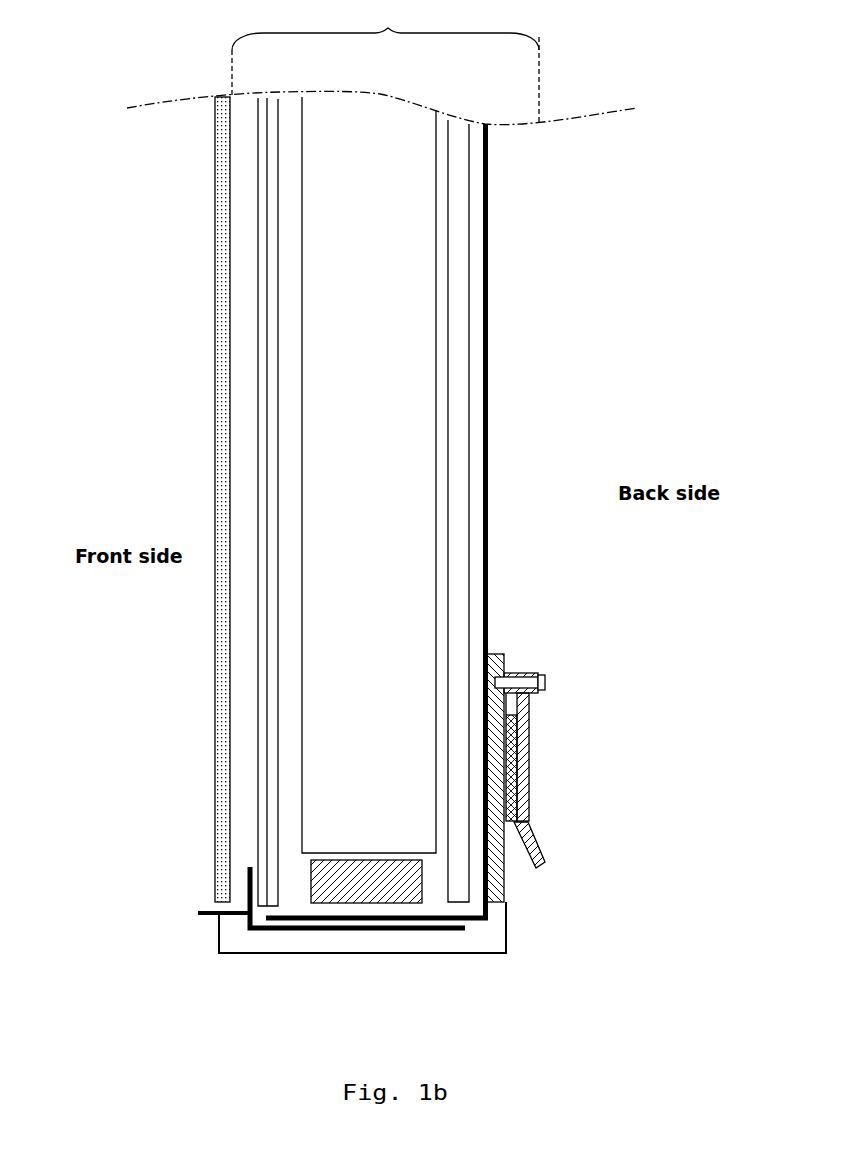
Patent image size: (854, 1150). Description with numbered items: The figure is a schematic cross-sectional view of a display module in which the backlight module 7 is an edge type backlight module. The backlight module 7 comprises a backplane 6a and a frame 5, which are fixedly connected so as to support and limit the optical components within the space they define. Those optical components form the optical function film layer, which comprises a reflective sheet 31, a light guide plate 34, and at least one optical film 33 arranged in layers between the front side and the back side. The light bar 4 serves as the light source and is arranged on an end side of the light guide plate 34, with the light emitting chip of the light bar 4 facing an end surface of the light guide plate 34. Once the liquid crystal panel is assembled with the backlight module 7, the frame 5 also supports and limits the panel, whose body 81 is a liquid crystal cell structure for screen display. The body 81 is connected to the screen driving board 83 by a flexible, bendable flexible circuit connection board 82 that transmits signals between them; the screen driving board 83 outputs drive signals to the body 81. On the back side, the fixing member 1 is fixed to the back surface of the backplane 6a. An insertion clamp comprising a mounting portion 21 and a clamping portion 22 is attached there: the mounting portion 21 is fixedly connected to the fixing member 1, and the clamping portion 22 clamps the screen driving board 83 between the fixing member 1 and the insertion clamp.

The backlight module 7 is at (385, 64).
The body 81 is at (213, 424).
The optical film 33 is at (265, 215).
The light guide plate 34 is at (436, 537).
The reflective sheet 31 is at (468, 323).
The backplane 6a is at (487, 432).
The fixing member 1 is at (505, 655).
The mounting portion 21 is at (530, 672).
The clamping portion 22 is at (528, 765).
The screen driving board 83 is at (515, 808).
The frame 5 is at (263, 930).
The light bar 4 is at (352, 903).
The flexible circuit connection board 82 is at (400, 953).